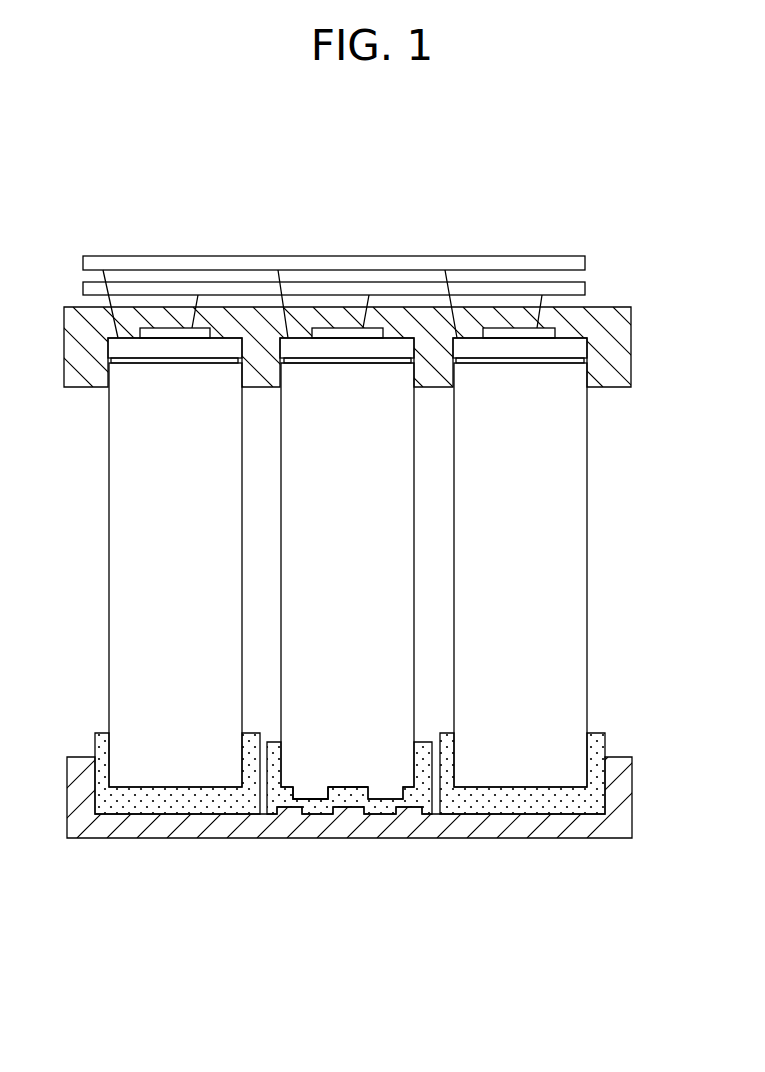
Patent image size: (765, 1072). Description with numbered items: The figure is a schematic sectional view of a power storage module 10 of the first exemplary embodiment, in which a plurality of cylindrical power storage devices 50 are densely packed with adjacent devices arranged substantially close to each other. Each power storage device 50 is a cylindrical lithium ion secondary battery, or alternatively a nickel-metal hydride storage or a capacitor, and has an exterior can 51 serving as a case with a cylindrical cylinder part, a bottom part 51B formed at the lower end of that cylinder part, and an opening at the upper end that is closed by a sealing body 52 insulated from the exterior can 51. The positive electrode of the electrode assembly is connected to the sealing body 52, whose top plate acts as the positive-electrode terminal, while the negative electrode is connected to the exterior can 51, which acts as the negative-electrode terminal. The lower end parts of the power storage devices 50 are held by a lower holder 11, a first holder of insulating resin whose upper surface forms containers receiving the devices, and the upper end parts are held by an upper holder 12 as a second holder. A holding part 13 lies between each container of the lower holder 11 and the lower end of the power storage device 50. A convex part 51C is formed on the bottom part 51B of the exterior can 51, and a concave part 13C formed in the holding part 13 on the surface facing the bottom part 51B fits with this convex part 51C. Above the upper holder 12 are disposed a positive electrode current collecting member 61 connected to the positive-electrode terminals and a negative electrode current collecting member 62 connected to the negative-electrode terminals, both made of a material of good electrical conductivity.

The power storage module 10 is at (543, 207).
The lower holder 11 is at (622, 800).
The upper holder 12 is at (622, 352).
The holding part 13 is at (263, 812).
The concave part 13C is at (308, 793).
The power storage device 50 is at (396, 331).
The exterior can 51 is at (415, 568).
The bottom part 51B is at (354, 790).
The convex part 51C is at (315, 801).
The sealing body 52 is at (333, 328).
The positive electrode current collecting member 61 is at (586, 288).
The negative electrode current collecting member 62 is at (586, 262).